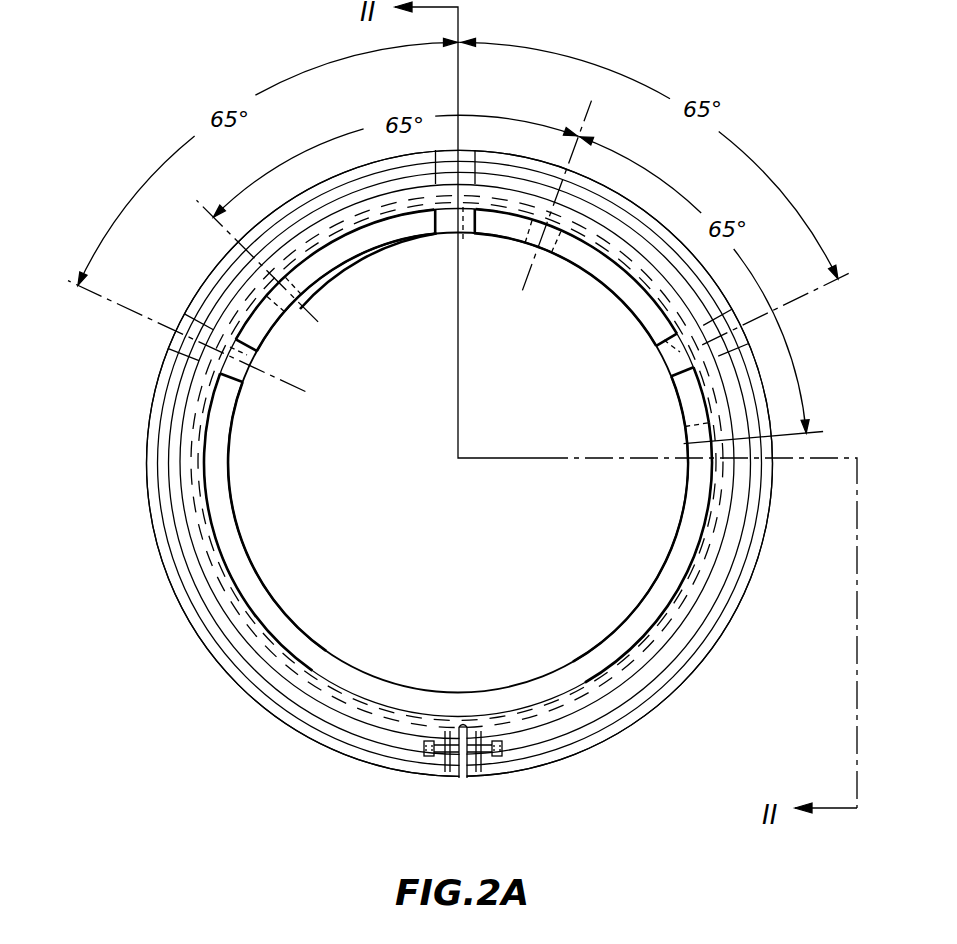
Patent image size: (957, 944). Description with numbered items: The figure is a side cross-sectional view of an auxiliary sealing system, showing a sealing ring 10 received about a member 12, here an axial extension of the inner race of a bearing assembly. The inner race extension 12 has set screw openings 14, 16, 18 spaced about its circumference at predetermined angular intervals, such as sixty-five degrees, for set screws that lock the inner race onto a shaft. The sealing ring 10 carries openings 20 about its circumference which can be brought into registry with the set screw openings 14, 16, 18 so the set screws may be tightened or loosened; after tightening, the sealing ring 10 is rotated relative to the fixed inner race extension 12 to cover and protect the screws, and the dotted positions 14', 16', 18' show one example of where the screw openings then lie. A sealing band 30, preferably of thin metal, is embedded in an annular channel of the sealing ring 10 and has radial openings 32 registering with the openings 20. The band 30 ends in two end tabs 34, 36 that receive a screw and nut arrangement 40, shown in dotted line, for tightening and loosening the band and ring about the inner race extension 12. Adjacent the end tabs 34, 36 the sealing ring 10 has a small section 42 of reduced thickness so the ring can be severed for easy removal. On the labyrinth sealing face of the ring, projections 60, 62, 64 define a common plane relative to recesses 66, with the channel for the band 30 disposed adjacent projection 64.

The sealing ring 10 is at (752, 593).
The inner race extension 12 is at (583, 655).
The set screw opening 14 is at (265, 522).
The rotated set screw opening position 14' is at (336, 280).
The set screw opening 16 is at (374, 259).
The rotated set screw opening position 16' is at (575, 277).
The set screw opening 18 is at (669, 396).
The rotated set screw opening position 18' is at (642, 553).
The openings 20 is at (474, 166).
The sealing band 30 is at (738, 529).
The radial openings 32 is at (227, 350).
The end tab 34 is at (478, 773).
The end tab 36 is at (450, 773).
The screw and nut arrangement 40 is at (505, 750).
The reduced thickness section 42 is at (463, 725).
The projection 60 is at (191, 624).
The projection 62 is at (212, 636).
The projection 64 is at (237, 650).
The recess 66 is at (261, 657).